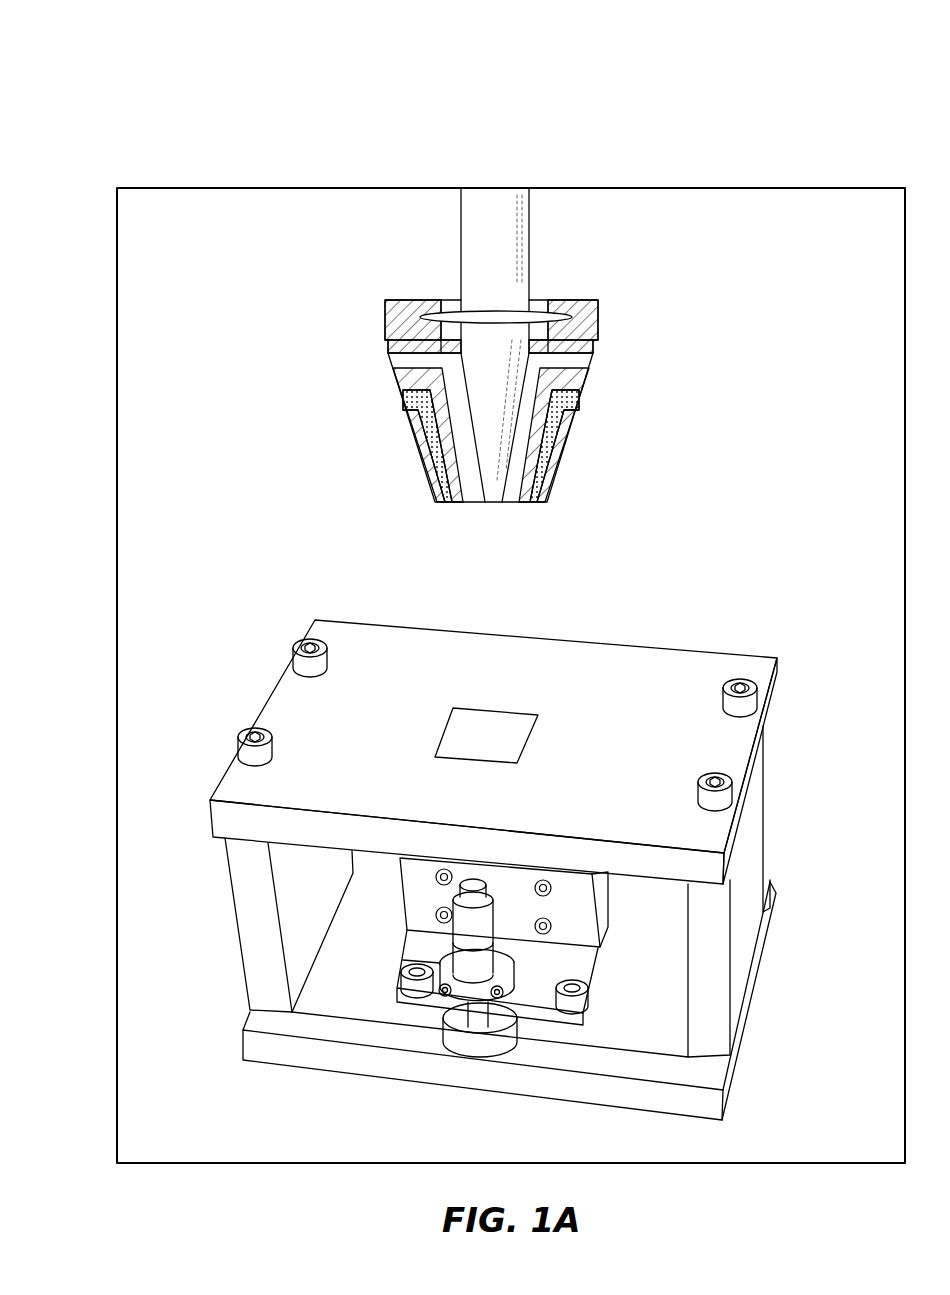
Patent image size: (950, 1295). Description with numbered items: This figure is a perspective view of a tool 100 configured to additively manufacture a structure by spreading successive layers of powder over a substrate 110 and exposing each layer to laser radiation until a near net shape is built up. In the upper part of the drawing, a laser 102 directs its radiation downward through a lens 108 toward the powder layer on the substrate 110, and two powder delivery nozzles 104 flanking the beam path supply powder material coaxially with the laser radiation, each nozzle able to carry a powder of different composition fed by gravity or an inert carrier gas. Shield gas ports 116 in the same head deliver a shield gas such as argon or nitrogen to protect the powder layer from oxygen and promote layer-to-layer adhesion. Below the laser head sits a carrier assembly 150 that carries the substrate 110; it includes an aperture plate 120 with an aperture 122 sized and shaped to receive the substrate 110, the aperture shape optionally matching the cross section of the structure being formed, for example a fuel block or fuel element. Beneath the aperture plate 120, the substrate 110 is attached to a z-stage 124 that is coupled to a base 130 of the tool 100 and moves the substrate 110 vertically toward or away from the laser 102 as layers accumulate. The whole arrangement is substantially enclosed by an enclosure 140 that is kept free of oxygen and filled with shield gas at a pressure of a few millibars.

The tool 100 is at (180, 137).
The laser 102 is at (461, 230).
The powder delivery nozzles 104 is at (413, 402).
The lens 108 is at (440, 316).
The substrate 110 is at (463, 743).
The shield gas ports 116 is at (407, 362).
The aperture plate 120 is at (778, 697).
The aperture 122 is at (520, 700).
The z-stage 124 is at (598, 907).
The base 130 is at (277, 1048).
The enclosure 140 is at (117, 423).
The carrier assembly 150 is at (160, 810).